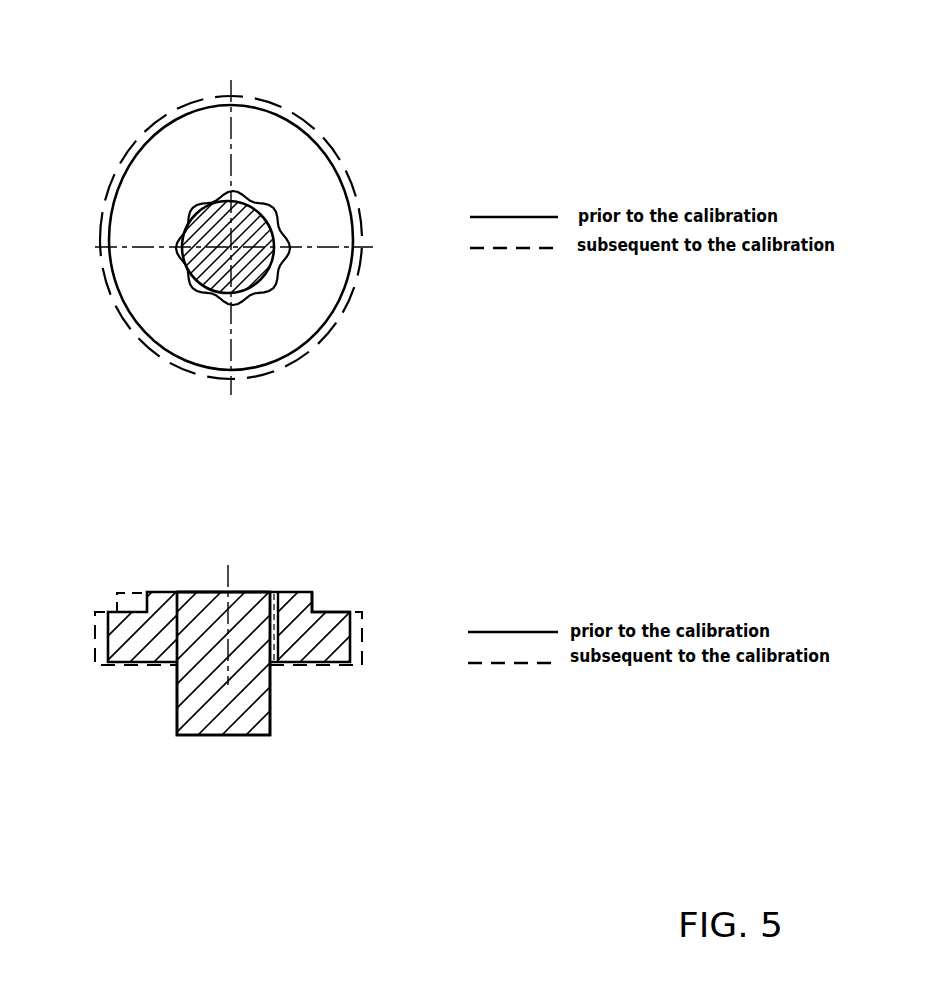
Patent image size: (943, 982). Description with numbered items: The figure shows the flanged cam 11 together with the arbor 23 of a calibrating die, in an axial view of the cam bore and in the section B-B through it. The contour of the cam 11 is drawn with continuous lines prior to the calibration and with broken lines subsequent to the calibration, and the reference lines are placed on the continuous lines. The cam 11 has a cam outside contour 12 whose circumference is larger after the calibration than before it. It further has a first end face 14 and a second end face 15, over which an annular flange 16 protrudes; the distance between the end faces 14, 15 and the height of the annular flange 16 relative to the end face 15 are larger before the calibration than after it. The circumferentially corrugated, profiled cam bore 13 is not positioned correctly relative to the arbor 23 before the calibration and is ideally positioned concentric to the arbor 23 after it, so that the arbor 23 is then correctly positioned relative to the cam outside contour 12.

The cam 11 is at (393, 90).
The cam outside contour 12 is at (343, 187).
The profiled cam bore 13 is at (285, 256).
The first end face 14 is at (283, 143).
The second end face 15 is at (327, 600).
The annular flange 16 is at (297, 588).
The arbor 23 is at (198, 290).